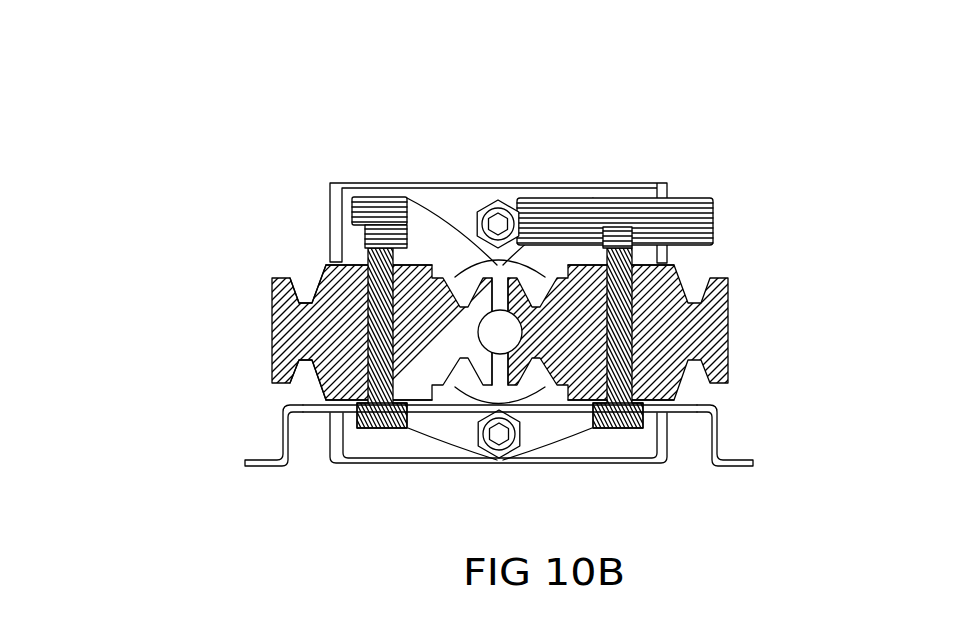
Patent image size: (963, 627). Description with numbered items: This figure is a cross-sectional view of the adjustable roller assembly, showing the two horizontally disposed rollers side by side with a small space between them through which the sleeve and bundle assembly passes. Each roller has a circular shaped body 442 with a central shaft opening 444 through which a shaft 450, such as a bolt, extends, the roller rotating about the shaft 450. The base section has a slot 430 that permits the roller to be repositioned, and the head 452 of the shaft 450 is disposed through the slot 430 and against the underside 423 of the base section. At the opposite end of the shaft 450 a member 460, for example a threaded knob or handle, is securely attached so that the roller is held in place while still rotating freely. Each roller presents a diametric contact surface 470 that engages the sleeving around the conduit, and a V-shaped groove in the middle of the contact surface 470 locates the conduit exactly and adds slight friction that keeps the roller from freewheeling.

The underside 423 is at (413, 420).
The slot 430 is at (279, 407).
The body 442 is at (270, 362).
The central shaft opening 444 is at (353, 390).
The shaft 450 is at (355, 247).
The head 452 is at (628, 430).
The member 460 is at (560, 200).
The contact surface 470 is at (268, 282).